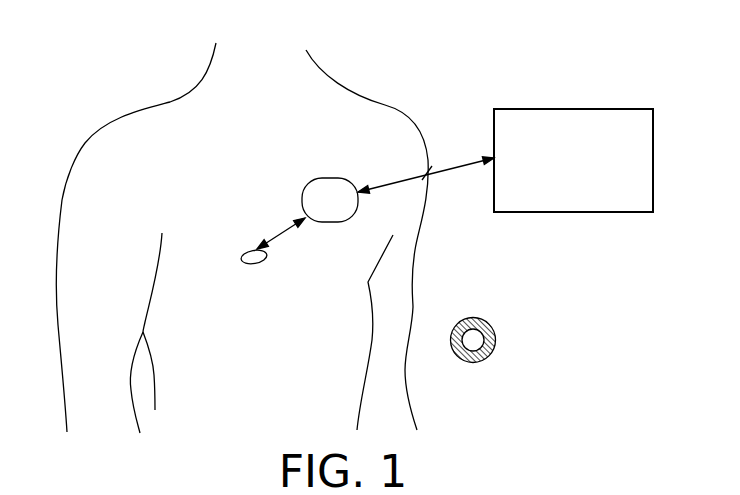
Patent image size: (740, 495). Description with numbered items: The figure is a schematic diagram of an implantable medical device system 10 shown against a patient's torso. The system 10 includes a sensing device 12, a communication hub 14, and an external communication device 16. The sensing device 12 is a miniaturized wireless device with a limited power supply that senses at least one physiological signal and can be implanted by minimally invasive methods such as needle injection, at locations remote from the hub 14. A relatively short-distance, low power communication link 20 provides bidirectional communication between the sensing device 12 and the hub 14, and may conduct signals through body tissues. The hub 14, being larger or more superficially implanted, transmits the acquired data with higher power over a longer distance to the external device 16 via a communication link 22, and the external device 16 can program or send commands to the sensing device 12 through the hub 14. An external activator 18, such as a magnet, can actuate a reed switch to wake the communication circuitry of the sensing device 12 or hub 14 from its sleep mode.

The implantable medical device system 10 is at (377, 27).
The sensing device 12 is at (243, 256).
The communication hub 14 is at (327, 178).
The external communication device 16 is at (537, 108).
The external activator 18 is at (497, 332).
The communication link 20 is at (282, 229).
The communication link 22 is at (452, 170).